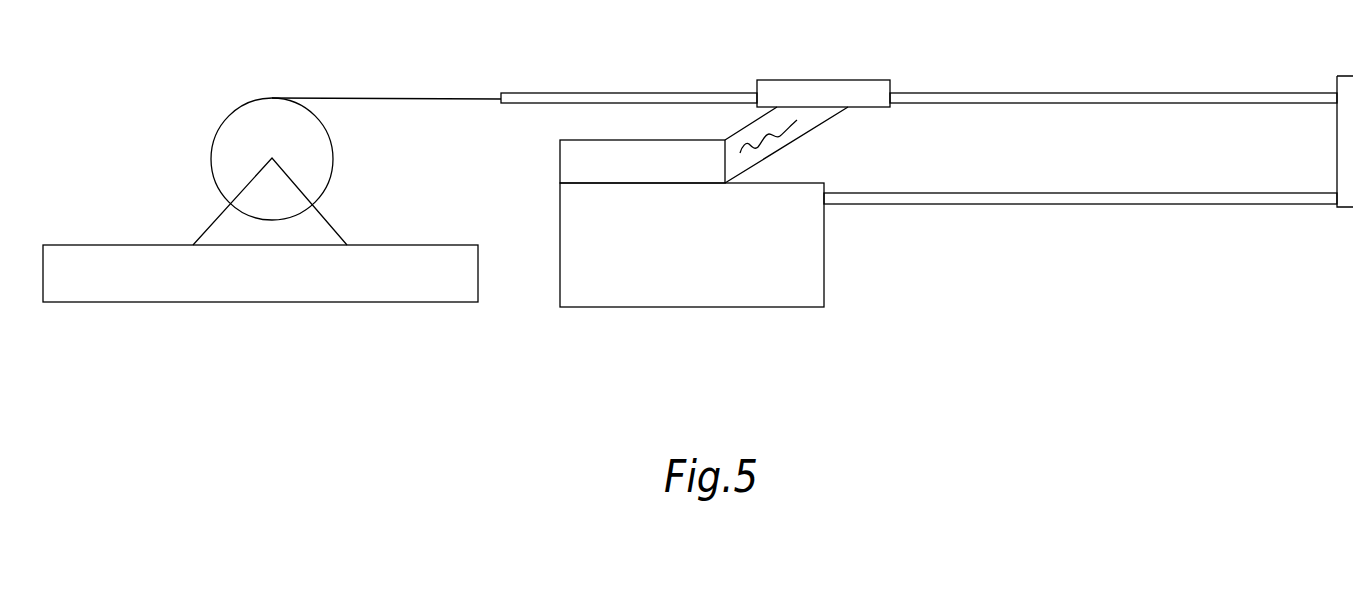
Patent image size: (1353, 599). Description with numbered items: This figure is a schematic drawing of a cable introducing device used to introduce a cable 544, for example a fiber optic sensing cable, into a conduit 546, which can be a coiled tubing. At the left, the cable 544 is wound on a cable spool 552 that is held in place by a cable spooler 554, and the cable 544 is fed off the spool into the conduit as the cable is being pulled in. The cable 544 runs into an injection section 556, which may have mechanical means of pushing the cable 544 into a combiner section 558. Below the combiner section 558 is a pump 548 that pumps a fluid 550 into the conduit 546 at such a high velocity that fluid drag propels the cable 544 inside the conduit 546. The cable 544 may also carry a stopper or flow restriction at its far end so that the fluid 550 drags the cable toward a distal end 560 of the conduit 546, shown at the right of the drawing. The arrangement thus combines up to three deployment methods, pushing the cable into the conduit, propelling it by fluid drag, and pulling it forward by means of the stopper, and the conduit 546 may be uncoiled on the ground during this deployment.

The cable 544 is at (387, 97).
The conduit 546 is at (1114, 92).
The pump 548 is at (568, 158).
The fluid 550 is at (773, 137).
The cable spool 552 is at (245, 130).
The cable spooler 554 is at (230, 225).
The injection section 556 is at (629, 92).
The combiner section 558 is at (846, 79).
The distal end 560 is at (1337, 92).